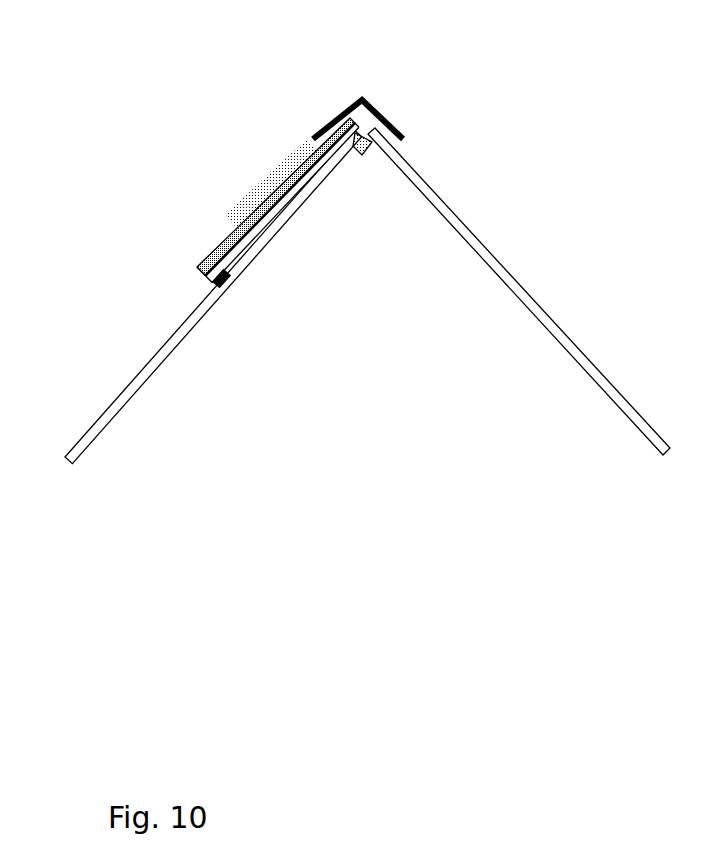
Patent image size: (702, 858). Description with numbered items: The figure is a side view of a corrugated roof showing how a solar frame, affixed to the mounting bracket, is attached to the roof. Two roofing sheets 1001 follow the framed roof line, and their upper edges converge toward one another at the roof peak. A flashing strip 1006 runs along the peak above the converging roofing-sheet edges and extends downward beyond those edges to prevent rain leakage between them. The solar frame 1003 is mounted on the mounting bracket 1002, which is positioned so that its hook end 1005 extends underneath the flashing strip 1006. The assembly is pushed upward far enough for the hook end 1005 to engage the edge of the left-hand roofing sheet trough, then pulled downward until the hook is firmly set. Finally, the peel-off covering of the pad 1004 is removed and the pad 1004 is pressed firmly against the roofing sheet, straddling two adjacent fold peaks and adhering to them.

The roofing sheets 1001 is at (517, 293).
The mounting bracket 1002 is at (218, 235).
The solar frame 1003 is at (277, 152).
The pad 1004 is at (212, 286).
The hook end 1005 is at (365, 155).
The flashing strip 1006 is at (373, 103).